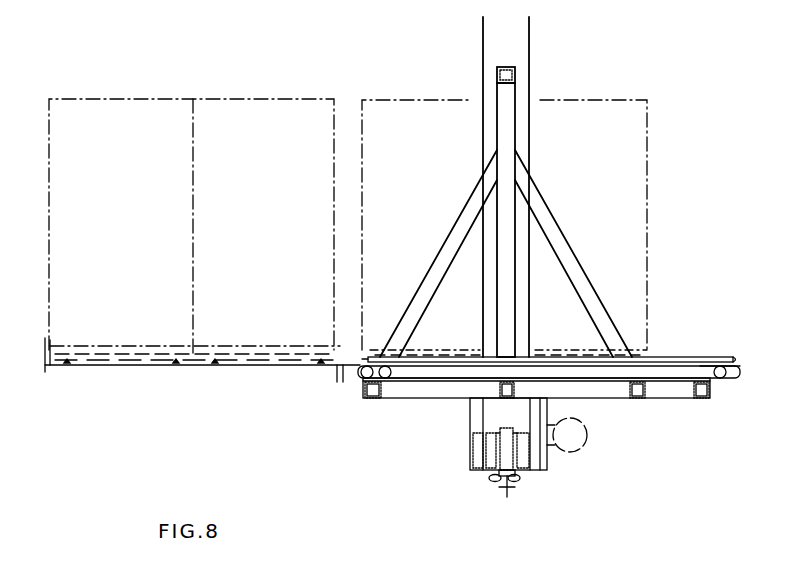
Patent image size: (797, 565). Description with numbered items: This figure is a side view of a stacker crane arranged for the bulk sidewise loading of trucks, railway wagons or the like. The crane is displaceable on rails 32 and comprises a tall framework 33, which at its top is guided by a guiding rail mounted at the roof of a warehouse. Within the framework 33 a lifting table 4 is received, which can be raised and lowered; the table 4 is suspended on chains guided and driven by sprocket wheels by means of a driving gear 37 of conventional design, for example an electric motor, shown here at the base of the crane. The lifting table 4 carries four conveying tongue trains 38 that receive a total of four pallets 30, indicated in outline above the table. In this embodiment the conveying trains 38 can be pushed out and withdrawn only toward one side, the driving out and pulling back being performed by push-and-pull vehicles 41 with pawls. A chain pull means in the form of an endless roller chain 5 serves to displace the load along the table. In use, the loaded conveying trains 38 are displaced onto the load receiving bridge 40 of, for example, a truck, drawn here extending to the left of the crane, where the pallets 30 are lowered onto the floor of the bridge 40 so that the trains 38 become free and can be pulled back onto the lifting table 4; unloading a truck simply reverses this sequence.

The lifting table 4 is at (640, 400).
The endless roller chain 5 is at (462, 377).
The pallets 30 is at (643, 350).
The rails 32 is at (507, 490).
The framework 33 is at (522, 48).
The driving gear 37 is at (578, 443).
The conveying tongue trains 38 is at (417, 355).
The load receiving bridge 40 is at (97, 365).
The push-and-pull vehicles 41 is at (722, 360).